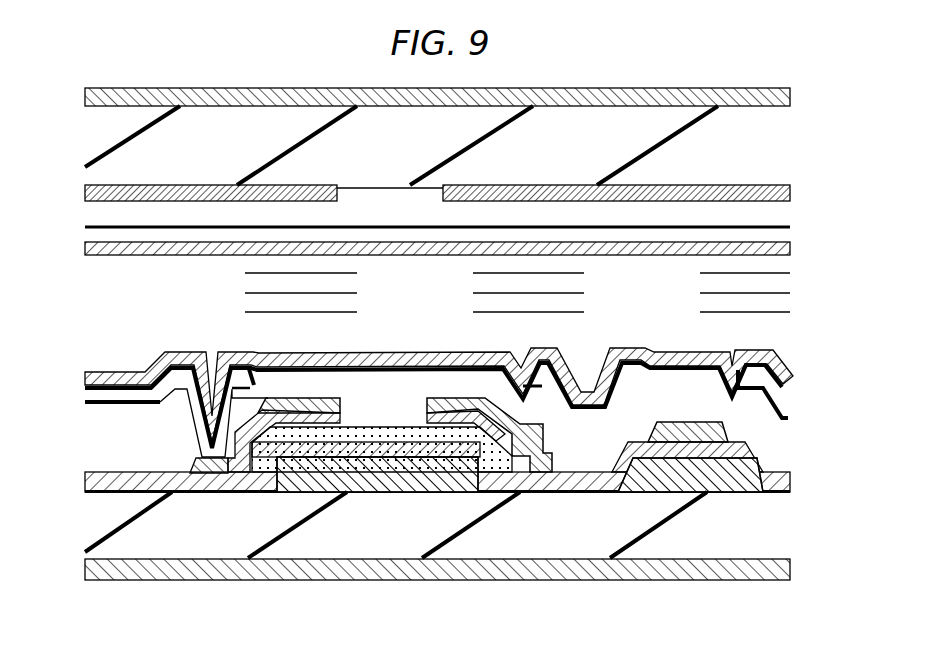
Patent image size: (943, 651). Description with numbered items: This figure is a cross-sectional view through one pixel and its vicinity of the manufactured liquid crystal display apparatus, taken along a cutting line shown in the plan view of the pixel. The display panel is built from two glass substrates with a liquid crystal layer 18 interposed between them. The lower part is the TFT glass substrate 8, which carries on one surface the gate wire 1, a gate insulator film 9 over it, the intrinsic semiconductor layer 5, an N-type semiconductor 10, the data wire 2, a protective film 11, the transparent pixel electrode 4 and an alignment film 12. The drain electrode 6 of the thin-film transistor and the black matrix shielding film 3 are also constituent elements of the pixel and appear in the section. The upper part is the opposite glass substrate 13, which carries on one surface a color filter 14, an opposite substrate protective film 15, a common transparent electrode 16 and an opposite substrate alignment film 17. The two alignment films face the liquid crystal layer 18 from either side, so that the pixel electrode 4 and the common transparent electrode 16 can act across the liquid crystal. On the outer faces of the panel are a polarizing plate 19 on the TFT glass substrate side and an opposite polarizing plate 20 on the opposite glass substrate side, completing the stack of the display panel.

The gate wire 1 is at (410, 468).
The data wire 2 is at (728, 432).
The black matrix shielding film 3 is at (790, 480).
The transparent pixel electrode 4 is at (148, 399).
The intrinsic semiconductor layer 5 is at (293, 458).
The drain electrode 6 is at (485, 408).
The TFT glass substrate 8 is at (152, 535).
The gate insulator film 9 is at (86, 483).
The N-type semiconductor 10 is at (328, 425).
The protective film 11 is at (150, 457).
The alignment film 12 is at (146, 372).
The opposite glass substrate 13 is at (792, 140).
The color filter 14 is at (792, 193).
The opposite substrate protective film 15 is at (792, 215).
The common transparent electrode 16 is at (792, 238).
The opposite substrate alignment film 17 is at (792, 258).
The liquid crystal layer 18 is at (792, 322).
The polarizing plate 19 is at (792, 575).
The opposite polarizing plate 20 is at (792, 98).